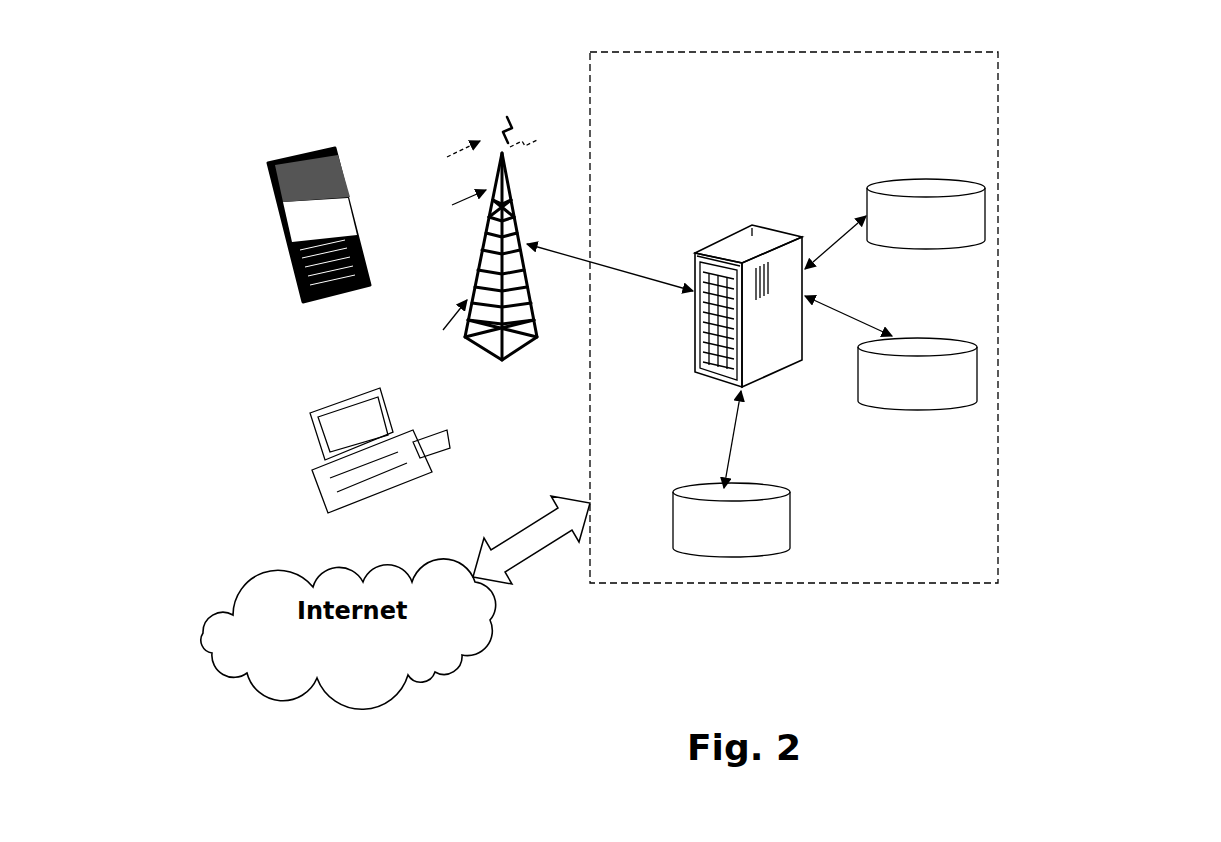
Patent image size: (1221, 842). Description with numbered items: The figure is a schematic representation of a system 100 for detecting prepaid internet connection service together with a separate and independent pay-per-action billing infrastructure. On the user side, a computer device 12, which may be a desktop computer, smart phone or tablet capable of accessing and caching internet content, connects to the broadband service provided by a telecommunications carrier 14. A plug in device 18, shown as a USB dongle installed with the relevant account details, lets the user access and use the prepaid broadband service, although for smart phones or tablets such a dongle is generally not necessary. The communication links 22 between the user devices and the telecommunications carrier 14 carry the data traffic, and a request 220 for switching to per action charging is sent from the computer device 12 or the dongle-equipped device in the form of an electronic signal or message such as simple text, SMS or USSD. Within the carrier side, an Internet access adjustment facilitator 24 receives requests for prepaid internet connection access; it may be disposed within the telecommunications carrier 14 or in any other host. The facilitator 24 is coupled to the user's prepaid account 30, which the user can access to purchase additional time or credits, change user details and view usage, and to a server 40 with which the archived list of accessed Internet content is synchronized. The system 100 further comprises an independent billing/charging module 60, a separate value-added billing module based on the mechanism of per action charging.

The system 100 is at (1112, 192).
The computer device 12 is at (327, 147).
The telecommunications carrier 14 is at (521, 216).
The plug in device 18 is at (452, 440).
The communication link 22 is at (365, 243).
The Internet access adjustment facilitator 24 is at (785, 331).
The prepaid account 30 is at (926, 402).
The server 40 is at (741, 541).
The billing/charging module 60 is at (936, 241).
The request 220 is at (353, 195).